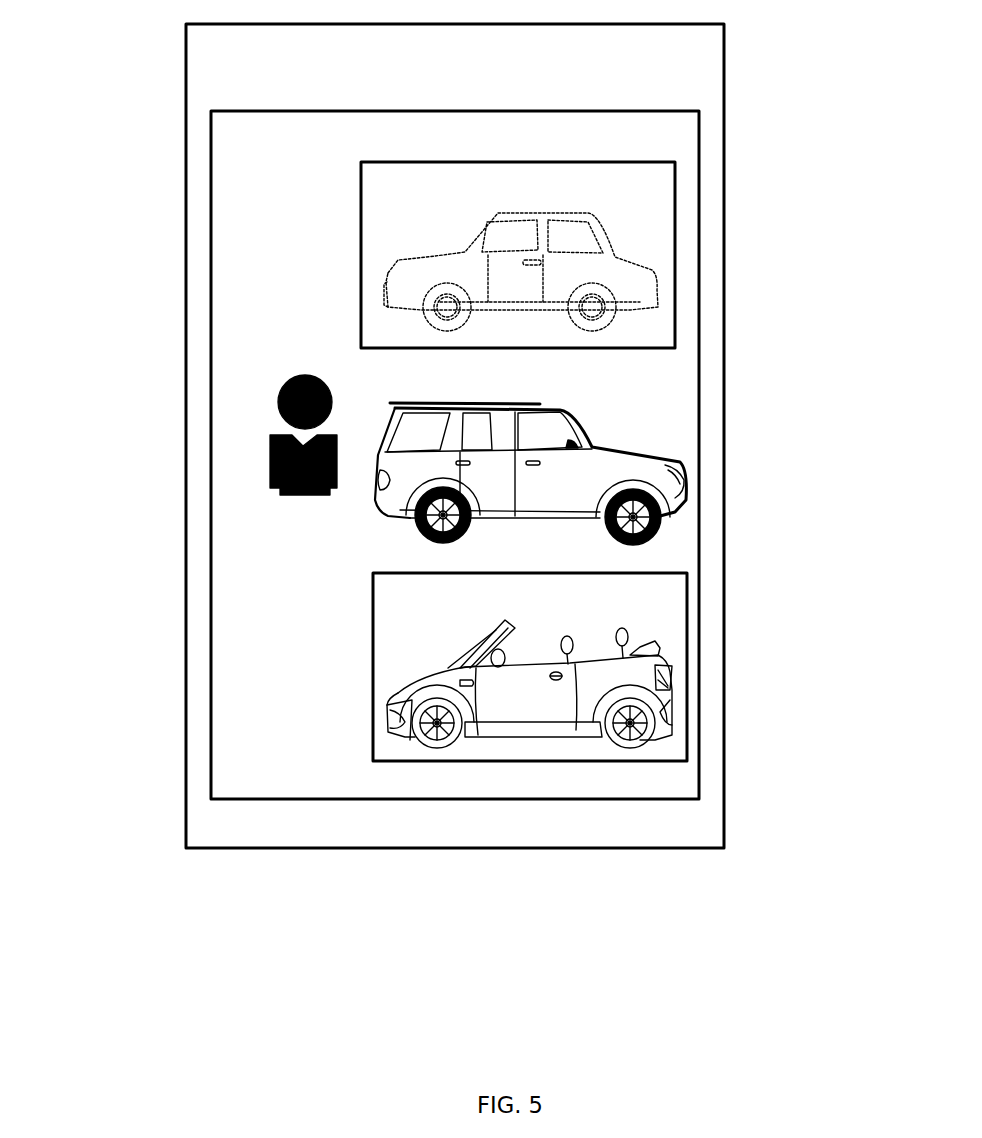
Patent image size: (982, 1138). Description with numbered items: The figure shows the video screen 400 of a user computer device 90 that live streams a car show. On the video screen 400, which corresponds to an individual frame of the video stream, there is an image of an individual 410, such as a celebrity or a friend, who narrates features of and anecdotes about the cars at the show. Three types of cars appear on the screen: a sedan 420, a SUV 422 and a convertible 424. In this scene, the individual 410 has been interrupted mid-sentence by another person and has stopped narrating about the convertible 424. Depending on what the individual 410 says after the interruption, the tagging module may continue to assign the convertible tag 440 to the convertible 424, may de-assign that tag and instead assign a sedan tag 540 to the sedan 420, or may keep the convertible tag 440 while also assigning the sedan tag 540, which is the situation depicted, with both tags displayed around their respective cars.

The user computer device 90 is at (599, 61).
The video screen 400 is at (554, 147).
The individual 410 is at (261, 429).
The sedan 420 is at (670, 281).
The SUV 422 is at (692, 459).
The convertible 424 is at (679, 670).
The convertible tag 440 is at (641, 611).
The sedan tag 540 is at (602, 197).